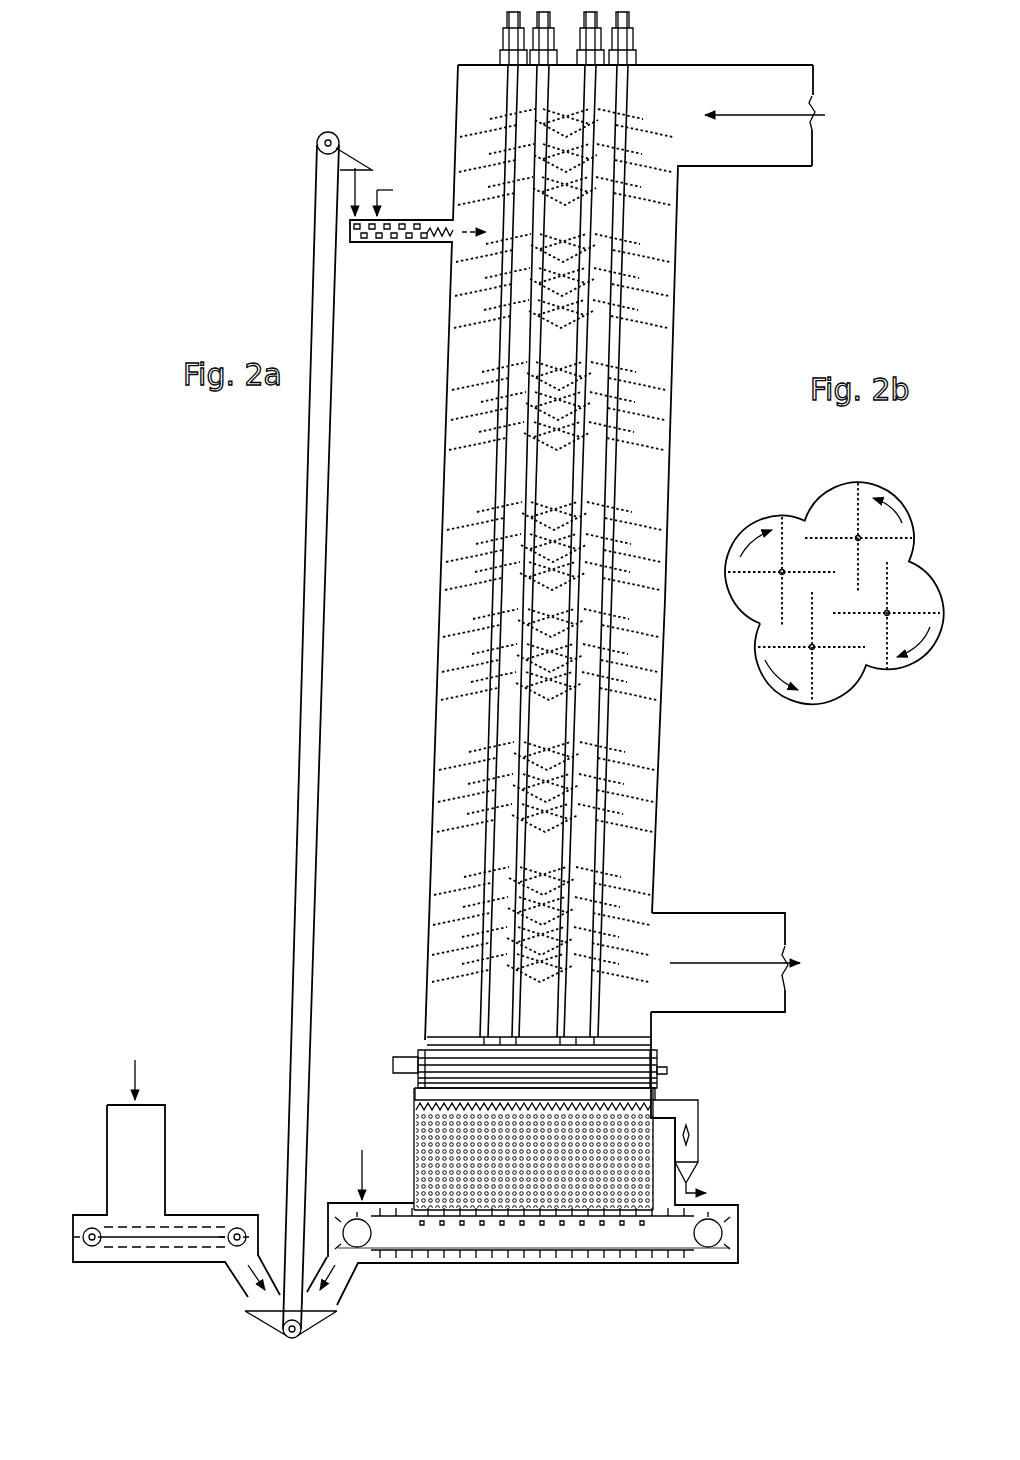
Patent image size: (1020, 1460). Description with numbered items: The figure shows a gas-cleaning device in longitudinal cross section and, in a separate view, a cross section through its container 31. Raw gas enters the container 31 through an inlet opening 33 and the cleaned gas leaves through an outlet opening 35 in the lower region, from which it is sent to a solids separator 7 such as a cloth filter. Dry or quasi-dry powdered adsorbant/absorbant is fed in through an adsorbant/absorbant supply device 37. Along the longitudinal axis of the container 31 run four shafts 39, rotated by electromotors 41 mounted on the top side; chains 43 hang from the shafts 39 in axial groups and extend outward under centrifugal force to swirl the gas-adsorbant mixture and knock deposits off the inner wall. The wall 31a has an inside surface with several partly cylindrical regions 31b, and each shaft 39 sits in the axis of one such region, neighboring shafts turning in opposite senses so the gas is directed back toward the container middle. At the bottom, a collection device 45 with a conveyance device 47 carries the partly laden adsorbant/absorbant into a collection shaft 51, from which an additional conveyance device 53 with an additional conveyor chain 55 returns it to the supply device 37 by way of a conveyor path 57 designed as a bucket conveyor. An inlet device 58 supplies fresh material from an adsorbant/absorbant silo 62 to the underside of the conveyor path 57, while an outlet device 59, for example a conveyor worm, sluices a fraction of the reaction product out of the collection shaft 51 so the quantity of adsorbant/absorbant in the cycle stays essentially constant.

In FIG. 2A, the solids separator 7 is at (359, 1163).
In FIG. 2A, the container 31 is at (684, 246).
In FIG. 2B, the container 31 is at (888, 690).
In FIG. 2A, the wall 31a is at (661, 757).
In FIG. 2B, the wall 31a is at (888, 487).
In FIG. 2B, the partly cylindrical regions 31b is at (921, 574).
In FIG. 2A, the inlet opening 33 is at (790, 91).
In FIG. 2A, the outlet opening 35 is at (772, 945).
In FIG. 2A, the adsorbant/absorbant supply device 37 is at (382, 128).
In FIG. 2A, the shafts 39 is at (494, 362).
In FIG. 2B, the shafts 39 is at (780, 574).
In FIG. 2A, the electromotors 41 is at (508, 46).
In FIG. 2A, the chains 43 is at (449, 710).
In FIG. 2B, the chains 43 is at (781, 515).
In FIG. 2A, the collection device 45 is at (683, 1077).
In FIG. 2A, the conveyance device 47 is at (420, 1058).
In FIG. 2A, the collection shaft 51 is at (417, 1112).
In FIG. 2A, the additional conveyance device 53 is at (742, 1232).
In FIG. 2A, the additional conveyor chain 55 is at (528, 1265).
In FIG. 2A, the conveyor path 57 is at (298, 540).
In FIG. 2A, the inlet device 58 is at (204, 1184).
In FIG. 2A, the outlet device 59 is at (702, 1133).
In FIG. 2A, the adsorbant/absorbant silo 62 is at (135, 1068).